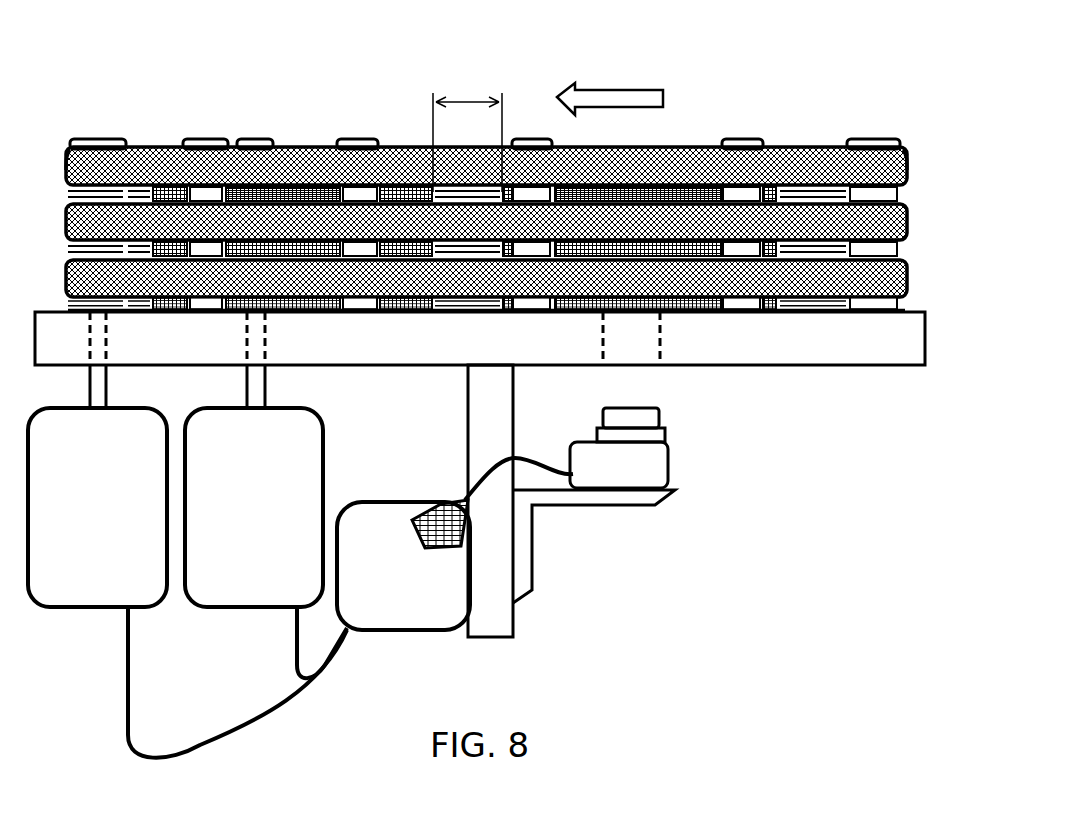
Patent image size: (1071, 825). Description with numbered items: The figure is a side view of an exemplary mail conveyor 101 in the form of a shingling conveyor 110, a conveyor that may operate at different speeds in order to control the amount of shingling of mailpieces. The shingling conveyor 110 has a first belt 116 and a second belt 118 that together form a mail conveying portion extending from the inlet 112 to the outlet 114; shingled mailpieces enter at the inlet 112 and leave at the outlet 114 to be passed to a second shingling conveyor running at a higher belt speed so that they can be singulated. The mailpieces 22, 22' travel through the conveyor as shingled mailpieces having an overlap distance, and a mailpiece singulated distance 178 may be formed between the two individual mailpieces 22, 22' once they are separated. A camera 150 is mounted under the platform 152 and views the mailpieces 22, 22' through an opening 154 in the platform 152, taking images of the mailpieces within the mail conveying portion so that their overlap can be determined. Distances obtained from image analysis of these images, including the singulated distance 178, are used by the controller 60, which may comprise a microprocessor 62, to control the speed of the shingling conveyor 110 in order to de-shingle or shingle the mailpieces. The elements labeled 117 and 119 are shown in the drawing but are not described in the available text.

The shingling conveyor 110 is at (154, 170).
The outlet 114 is at (64, 165).
The inlet 112 is at (884, 185).
The first belt 116 is at (320, 165).
The second belt 118 is at (808, 190).
The mail conveyor 101 is at (270, 180).
The mailpiece 22 is at (283, 126).
The mailpiece 22' is at (638, 129).
The singulated distance 178 is at (467, 133).
The platform 152 is at (410, 365).
The opening 154 is at (650, 322).
The camera 150 is at (641, 466).
The first material reservoir 117 is at (118, 608).
The second material reservoir 119 is at (263, 608).
The controller 60 is at (383, 600).
The microprocessor 62 is at (443, 540).